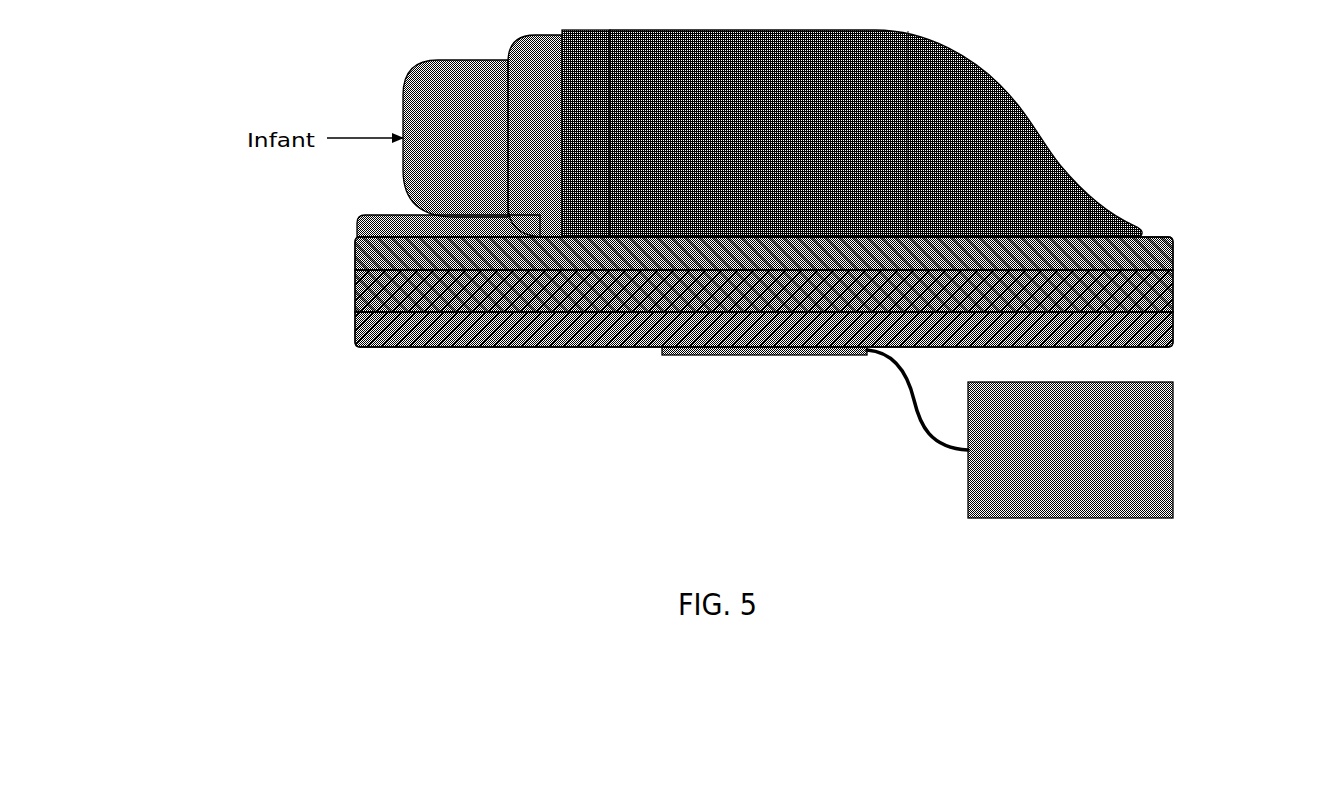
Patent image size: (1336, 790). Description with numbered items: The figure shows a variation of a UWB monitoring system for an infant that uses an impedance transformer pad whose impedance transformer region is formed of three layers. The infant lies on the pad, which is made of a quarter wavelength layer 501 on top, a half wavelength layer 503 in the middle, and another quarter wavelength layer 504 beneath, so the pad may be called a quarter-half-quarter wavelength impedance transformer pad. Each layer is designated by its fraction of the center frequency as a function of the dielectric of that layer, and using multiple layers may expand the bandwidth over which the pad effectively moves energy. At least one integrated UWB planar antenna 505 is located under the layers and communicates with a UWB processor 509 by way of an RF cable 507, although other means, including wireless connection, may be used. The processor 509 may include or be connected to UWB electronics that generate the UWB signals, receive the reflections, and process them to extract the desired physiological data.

The quarter wavelength layer 501 is at (357, 249).
The half wavelength layer 503 is at (357, 289).
The quarter wavelength layer 504 is at (357, 333).
The UWB planar antenna 505 is at (662, 351).
The RF cable 507 is at (910, 385).
The UWB processor 509 is at (1215, 420).